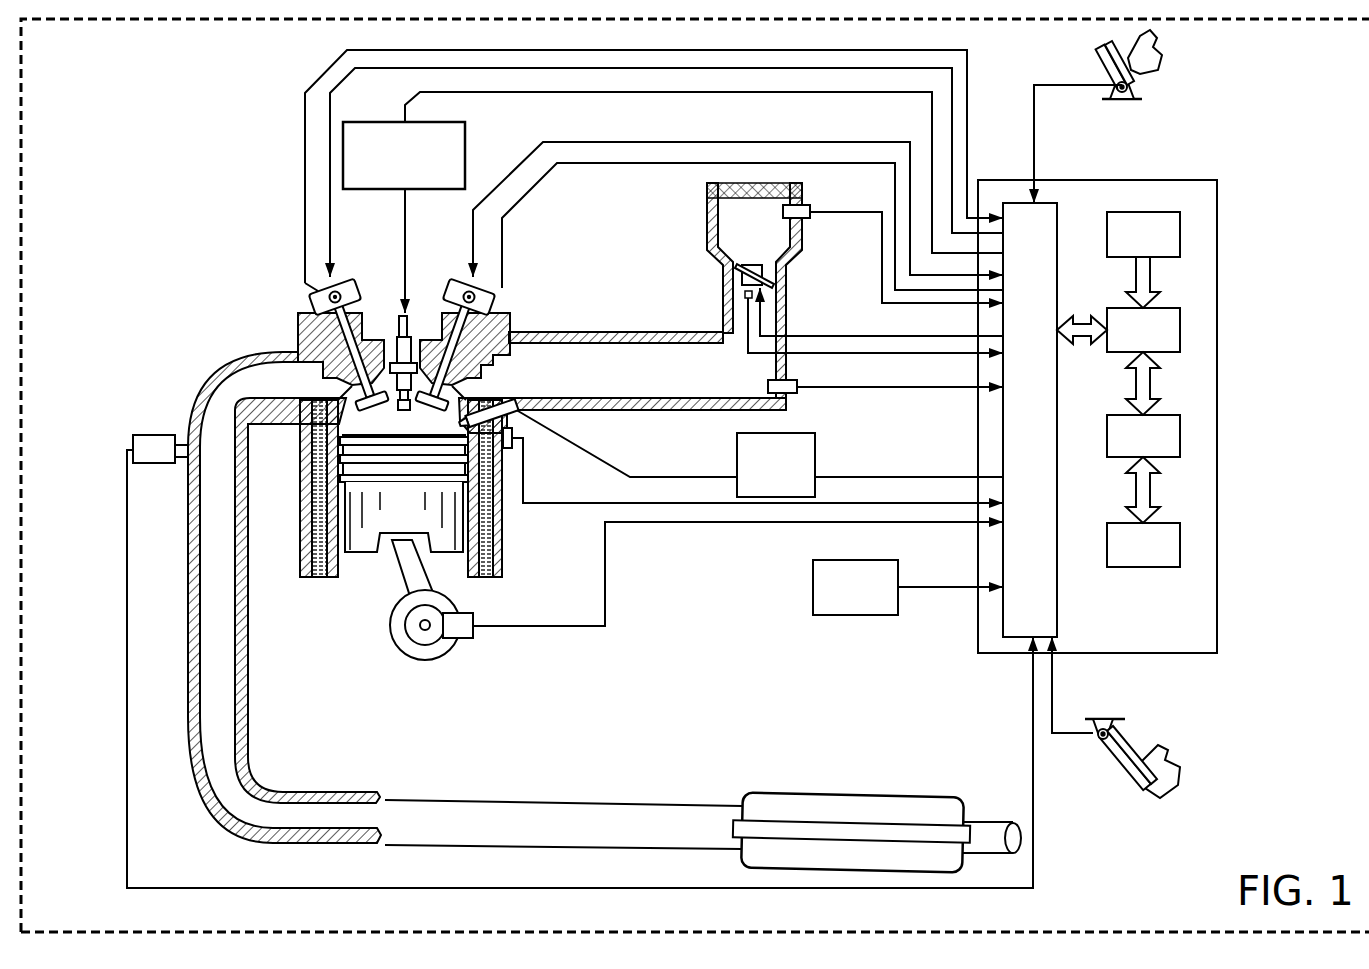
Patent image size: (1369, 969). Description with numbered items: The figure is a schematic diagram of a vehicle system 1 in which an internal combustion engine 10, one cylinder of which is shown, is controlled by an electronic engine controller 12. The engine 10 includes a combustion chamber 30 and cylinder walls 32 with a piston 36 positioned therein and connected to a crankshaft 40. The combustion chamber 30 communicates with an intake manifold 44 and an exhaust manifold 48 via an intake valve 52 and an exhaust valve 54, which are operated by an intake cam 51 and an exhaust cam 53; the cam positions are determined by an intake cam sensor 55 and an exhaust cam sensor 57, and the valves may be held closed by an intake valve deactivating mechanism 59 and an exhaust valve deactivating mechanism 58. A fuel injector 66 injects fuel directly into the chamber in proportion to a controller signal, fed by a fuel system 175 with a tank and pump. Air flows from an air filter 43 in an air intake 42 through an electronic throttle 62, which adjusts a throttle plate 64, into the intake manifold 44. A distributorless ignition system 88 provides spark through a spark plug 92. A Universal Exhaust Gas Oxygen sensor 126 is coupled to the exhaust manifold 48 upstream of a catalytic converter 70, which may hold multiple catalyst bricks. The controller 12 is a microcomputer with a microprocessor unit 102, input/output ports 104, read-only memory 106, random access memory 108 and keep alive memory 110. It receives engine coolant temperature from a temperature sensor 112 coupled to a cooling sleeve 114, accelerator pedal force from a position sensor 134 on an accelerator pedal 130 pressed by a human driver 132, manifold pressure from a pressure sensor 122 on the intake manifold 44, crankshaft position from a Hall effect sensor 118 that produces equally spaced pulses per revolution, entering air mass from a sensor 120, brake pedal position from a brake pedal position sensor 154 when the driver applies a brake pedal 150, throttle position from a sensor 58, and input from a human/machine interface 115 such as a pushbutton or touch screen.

The vehicle system 1 is at (231, 20).
The internal combustion engine 10 is at (232, 268).
The electronic engine controller 12 is at (1205, 180).
The combustion chamber 30 is at (402, 418).
The cylinder walls 32 is at (341, 568).
The piston 36 is at (387, 522).
The crankshaft 40 is at (412, 648).
The air intake 42 is at (754, 290).
The air filter 43 is at (717, 184).
The intake manifold 44 is at (622, 382).
The exhaust manifold 48 is at (465, 600).
The intake cam 51 is at (458, 280).
The intake valve 52 is at (458, 386).
The exhaust cam 53 is at (343, 280).
The exhaust valve 54 is at (352, 387).
The intake cam sensor 55 is at (480, 302).
The exhaust cam sensor 57 is at (318, 298).
The exhaust valve deactivating mechanism 58 is at (350, 290).
The intake valve deactivating mechanism 59 is at (458, 298).
The electronic throttle 62 is at (766, 272).
The throttle plate 64 is at (735, 272).
The fuel injector 66 is at (508, 413).
The catalytic converter 70 is at (786, 794).
The distributorless ignition system 88 is at (361, 122).
The spark plug 92 is at (409, 318).
The microprocessor unit 102 is at (1183, 330).
The input/output ports 104 is at (1058, 210).
The read-only memory 106 is at (1183, 232).
The random access memory 108 is at (1183, 437).
The keep alive memory 110 is at (1183, 543).
The temperature sensor 112 is at (520, 447).
The cooling sleeve 114 is at (497, 523).
The human/machine interface 115 is at (908, 587).
The Hall effect sensor 118 is at (474, 614).
The air mass sensor 120 is at (800, 205).
The pressure sensor 122 is at (795, 393).
The Universal Exhaust Gas Oxygen sensor 126 is at (133, 437).
The accelerator pedal 130 is at (1100, 63).
The human driver 132 is at (1160, 46).
The position sensor 134 is at (1130, 88).
The brake pedal 150 is at (1130, 778).
The brake pedal position sensor 154 is at (1093, 732).
The fuel system 175 is at (776, 465).